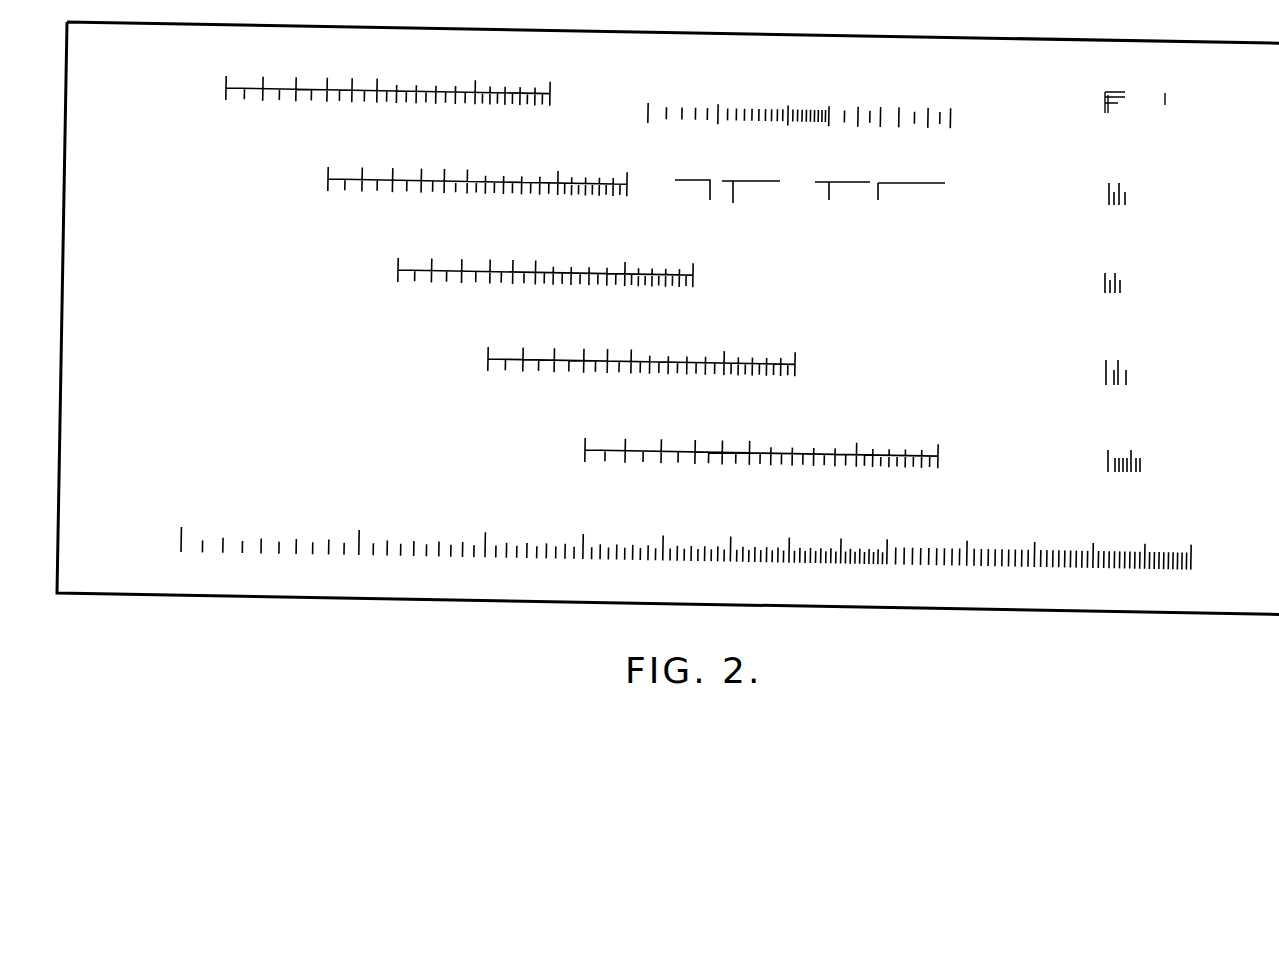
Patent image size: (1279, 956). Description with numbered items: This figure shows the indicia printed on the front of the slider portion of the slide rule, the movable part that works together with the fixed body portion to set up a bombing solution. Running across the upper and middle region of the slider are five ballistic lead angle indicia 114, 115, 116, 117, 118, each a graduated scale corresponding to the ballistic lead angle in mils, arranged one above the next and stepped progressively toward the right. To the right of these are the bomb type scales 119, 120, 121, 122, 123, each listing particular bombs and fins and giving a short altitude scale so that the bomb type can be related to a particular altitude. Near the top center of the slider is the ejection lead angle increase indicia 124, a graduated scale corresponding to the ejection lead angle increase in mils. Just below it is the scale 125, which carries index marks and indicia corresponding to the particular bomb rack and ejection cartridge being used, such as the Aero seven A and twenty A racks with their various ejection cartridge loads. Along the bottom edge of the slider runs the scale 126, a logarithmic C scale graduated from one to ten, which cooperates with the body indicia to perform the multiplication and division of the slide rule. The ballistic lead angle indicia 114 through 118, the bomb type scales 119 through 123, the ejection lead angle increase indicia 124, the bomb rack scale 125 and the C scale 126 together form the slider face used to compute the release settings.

The ballistic lead angle indicia 114 is at (192, 100).
The ballistic lead angle indicia 115 is at (308, 190).
The ballistic lead angle indicia 116 is at (375, 280).
The ballistic lead angle indicia 117 is at (462, 370).
The ballistic lead angle indicia 118 is at (560, 464).
The bomb type scale 119 is at (1118, 74).
The bomb type scale 120 is at (1055, 151).
The bomb type scale 121 is at (988, 280).
The bomb type scale 122 is at (998, 370).
The bomb type scale 123 is at (1068, 490).
The ejection lead angle increase indicia 124 is at (635, 123).
The bomb rack and ejection cartridge scale 125 is at (792, 226).
The logarithmic C scale 126 is at (245, 507).